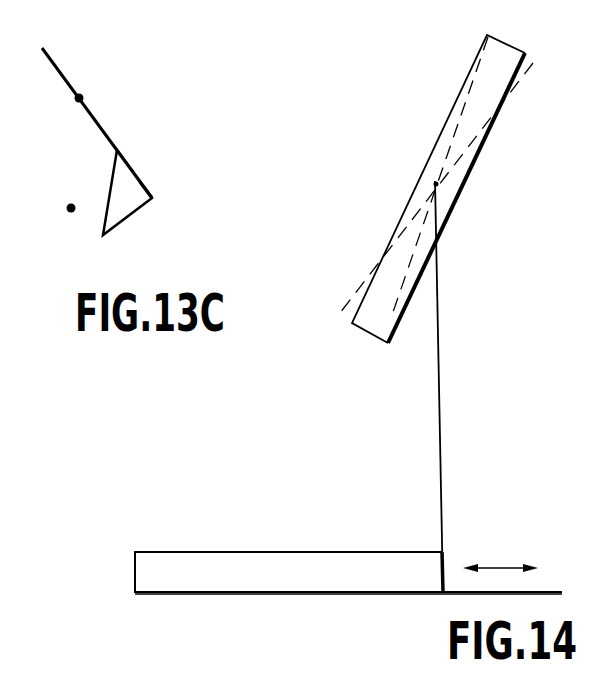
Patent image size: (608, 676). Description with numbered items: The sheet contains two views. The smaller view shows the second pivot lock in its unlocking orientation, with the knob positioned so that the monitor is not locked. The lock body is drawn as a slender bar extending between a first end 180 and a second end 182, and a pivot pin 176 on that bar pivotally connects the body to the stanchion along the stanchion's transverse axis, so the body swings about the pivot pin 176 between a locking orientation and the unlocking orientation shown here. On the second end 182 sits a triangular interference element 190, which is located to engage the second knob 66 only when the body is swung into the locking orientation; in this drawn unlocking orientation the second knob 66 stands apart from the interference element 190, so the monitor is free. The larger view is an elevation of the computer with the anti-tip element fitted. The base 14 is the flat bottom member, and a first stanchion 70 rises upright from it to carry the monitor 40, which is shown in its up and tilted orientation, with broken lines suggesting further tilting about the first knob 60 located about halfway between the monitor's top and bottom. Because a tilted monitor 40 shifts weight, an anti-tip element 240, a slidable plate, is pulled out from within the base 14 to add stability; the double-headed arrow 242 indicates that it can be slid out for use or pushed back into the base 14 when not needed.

In FIG. 13C, the first end 180 is at (42, 48).
In FIG. 13C, the pivot pin 176 is at (80, 97).
In FIG. 13C, the second end 182 is at (152, 198).
In FIG. 13C, the interference element 190 is at (117, 188).
In FIG. 13C, the second knob 66 is at (71, 207).
In FIG. 14, the monitor 40 is at (445, 125).
In FIG. 14, the first knob 60 is at (436, 184).
In FIG. 14, the first stanchion 70 is at (440, 346).
In FIG. 14, the base 14 is at (207, 562).
In FIG. 14, the double-headed arrow 242 is at (502, 565).
In FIG. 14, the anti-tip element 240 is at (547, 588).